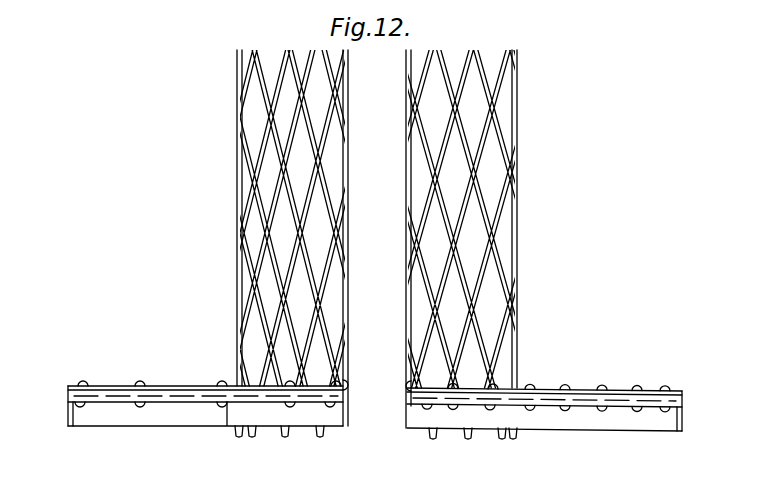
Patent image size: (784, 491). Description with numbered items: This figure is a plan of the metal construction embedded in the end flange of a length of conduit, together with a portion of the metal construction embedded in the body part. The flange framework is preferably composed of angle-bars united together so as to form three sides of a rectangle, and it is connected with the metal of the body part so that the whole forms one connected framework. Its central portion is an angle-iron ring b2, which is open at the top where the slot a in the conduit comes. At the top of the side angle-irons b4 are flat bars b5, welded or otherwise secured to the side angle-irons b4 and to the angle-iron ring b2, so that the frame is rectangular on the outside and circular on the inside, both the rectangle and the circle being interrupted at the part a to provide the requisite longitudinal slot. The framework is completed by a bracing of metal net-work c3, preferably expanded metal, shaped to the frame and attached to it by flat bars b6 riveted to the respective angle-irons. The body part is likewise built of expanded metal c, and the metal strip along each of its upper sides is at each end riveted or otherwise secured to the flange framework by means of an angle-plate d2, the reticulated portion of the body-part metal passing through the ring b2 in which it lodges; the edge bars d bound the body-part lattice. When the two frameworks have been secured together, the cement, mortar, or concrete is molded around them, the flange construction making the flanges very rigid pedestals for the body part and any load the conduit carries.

The slot a is at (379, 202).
The expanded metal of the body part c is at (272, 160).
The metal net-work bracing c3 is at (183, 395).
The edge bar d is at (407, 341).
The angle-plate d2 is at (408, 403).
The angle-iron ring b2 is at (520, 419).
The side angle-irons b4 is at (66, 418).
The flat bars b5 is at (270, 402).
The flat bars b6 is at (157, 390).